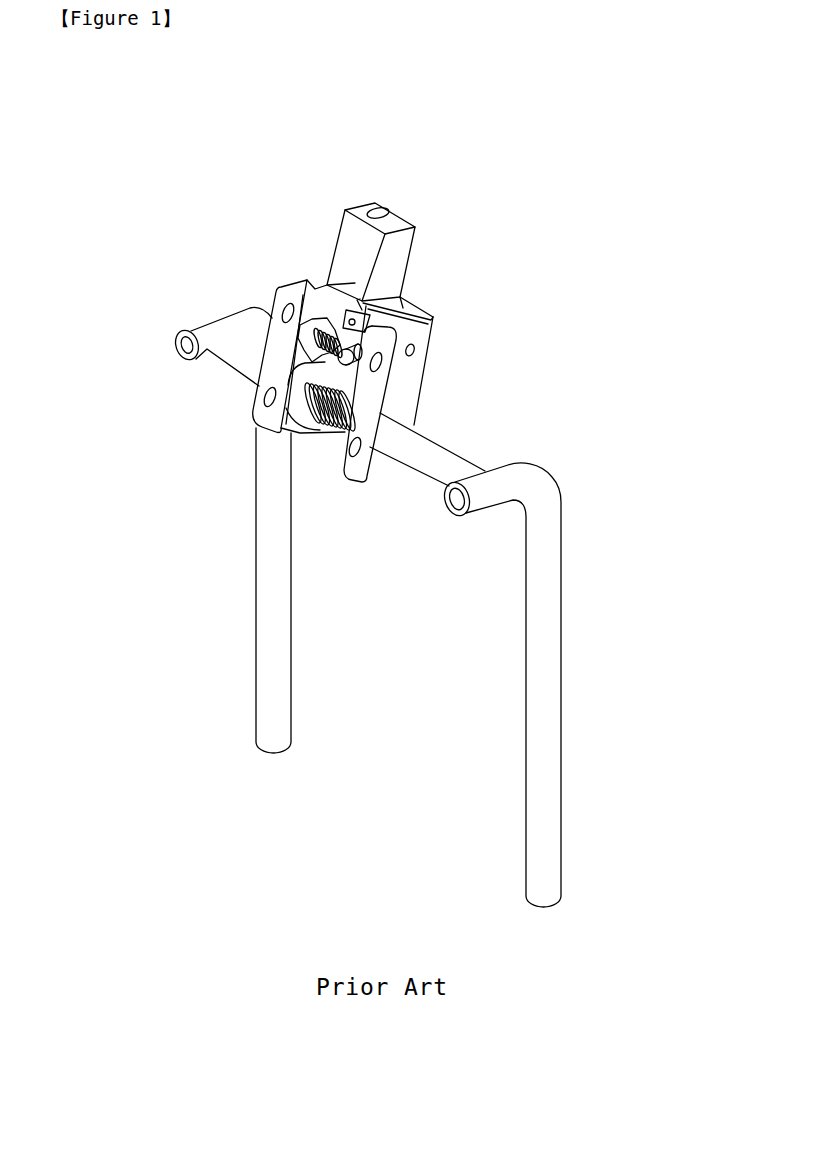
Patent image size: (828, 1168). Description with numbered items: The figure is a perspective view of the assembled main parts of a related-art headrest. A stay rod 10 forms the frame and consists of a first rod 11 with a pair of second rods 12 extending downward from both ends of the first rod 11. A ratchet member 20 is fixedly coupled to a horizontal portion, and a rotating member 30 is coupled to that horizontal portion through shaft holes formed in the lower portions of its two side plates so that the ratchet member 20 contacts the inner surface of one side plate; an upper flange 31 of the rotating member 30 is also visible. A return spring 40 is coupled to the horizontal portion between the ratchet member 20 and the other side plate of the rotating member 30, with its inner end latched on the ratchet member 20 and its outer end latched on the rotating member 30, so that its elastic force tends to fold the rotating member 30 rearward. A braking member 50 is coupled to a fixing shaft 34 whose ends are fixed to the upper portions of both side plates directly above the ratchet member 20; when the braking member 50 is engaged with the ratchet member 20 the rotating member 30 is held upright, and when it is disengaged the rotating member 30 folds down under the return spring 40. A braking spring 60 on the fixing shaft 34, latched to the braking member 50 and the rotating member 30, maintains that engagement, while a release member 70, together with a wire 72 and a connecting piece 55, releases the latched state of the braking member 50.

The stay rod 10 is at (578, 744).
The first rod 11 is at (421, 460).
The second rods 12 is at (267, 533).
The ratchet member 20 is at (280, 380).
The rotating member 30 is at (440, 357).
The upper flange 31 is at (425, 307).
The fixing shaft 34 is at (380, 347).
The return spring 40 is at (327, 441).
The braking member 50 is at (299, 310).
The connecting piece 55 is at (357, 306).
The braking spring 60 is at (310, 352).
The release member 70 is at (356, 200).
The wire 72 is at (405, 308).